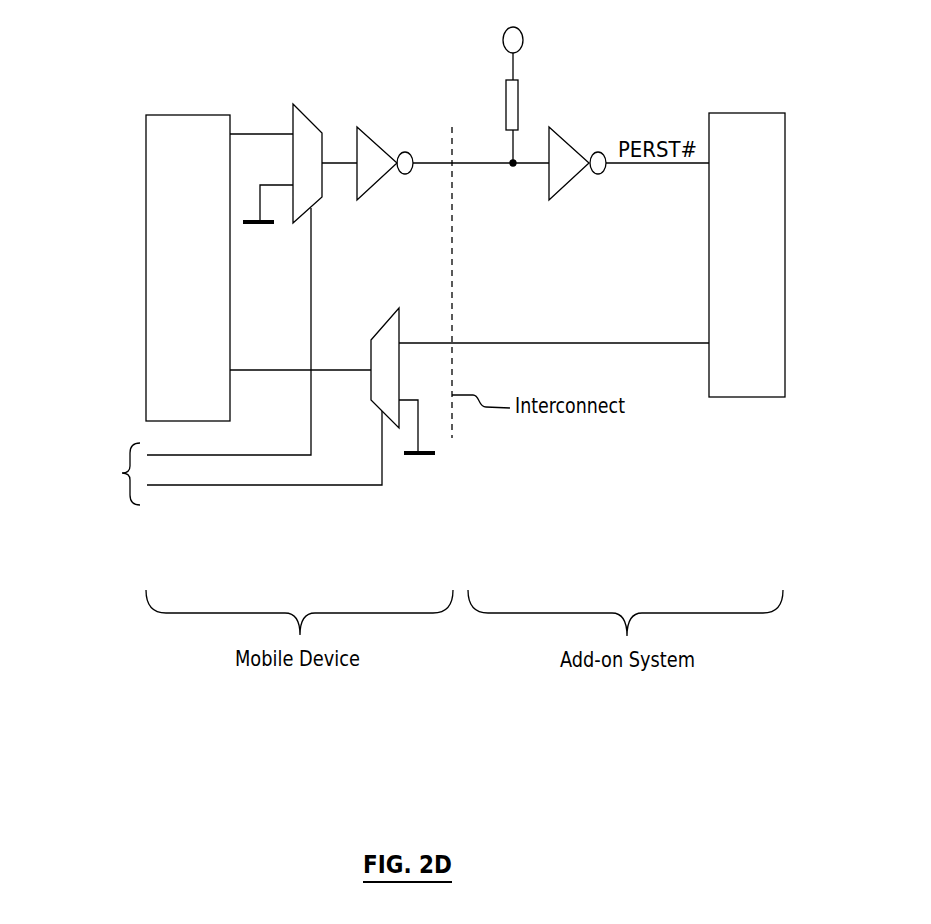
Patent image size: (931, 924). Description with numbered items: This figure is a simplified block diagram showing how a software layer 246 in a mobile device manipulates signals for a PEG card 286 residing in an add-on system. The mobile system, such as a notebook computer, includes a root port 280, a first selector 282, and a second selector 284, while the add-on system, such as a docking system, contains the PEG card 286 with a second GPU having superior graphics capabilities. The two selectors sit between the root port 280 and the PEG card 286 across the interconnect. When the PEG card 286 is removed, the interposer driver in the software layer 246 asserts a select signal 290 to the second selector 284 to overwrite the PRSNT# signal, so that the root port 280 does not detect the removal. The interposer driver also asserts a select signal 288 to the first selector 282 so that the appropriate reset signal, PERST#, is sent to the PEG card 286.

The root port 280 is at (188, 115).
The first selector 282 is at (305, 118).
The second selector 284 is at (385, 322).
The PEG card 286 is at (747, 113).
The select signal 288 is at (200, 455).
The select signal 290 is at (293, 485).
The software layer 246 is at (78, 471).